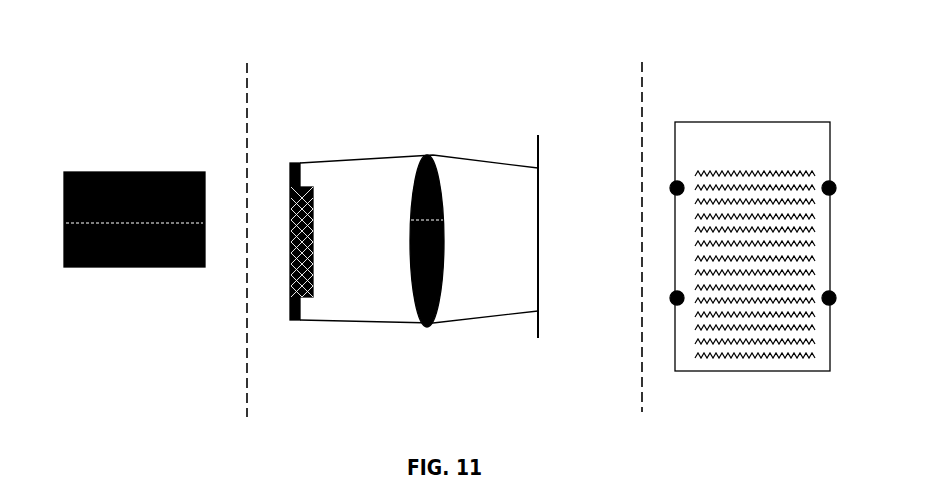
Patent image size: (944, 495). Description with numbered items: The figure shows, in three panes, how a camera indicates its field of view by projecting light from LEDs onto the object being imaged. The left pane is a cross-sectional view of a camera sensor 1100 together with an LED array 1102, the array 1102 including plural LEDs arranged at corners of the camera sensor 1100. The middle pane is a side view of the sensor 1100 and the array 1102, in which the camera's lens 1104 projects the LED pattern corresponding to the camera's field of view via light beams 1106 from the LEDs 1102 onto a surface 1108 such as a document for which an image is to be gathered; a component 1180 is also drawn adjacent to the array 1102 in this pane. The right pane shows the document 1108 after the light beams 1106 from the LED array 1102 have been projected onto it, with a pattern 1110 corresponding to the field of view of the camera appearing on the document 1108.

The camera sensor 1100 is at (167, 172).
The LED array 1102 is at (56, 161).
The lens 1104 is at (425, 157).
The light beams 1106 is at (470, 163).
The surface 1108 is at (537, 143).
The pattern 1110 is at (676, 186).
The mask 1180 is at (340, 189).